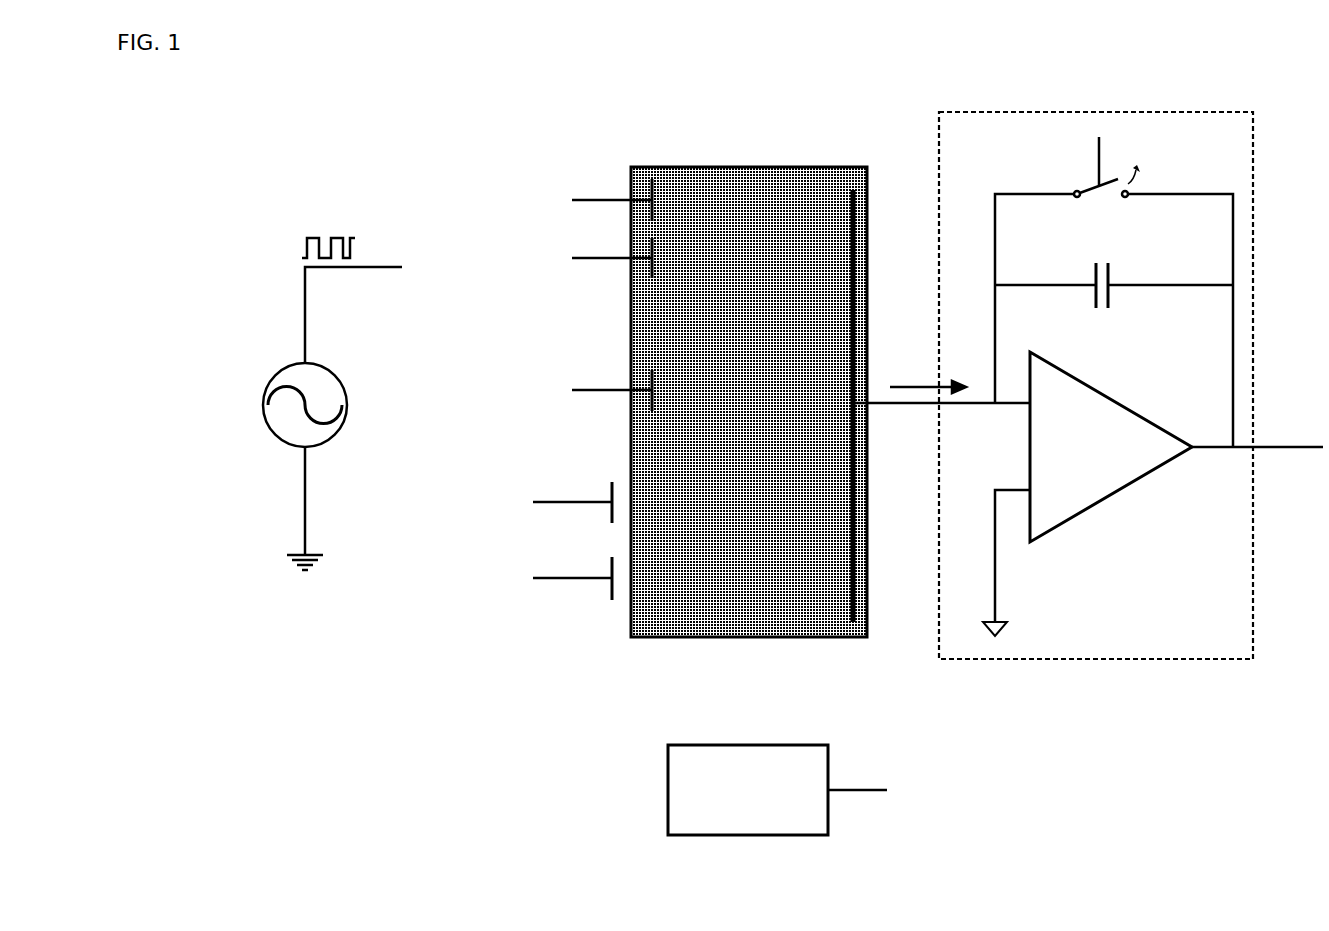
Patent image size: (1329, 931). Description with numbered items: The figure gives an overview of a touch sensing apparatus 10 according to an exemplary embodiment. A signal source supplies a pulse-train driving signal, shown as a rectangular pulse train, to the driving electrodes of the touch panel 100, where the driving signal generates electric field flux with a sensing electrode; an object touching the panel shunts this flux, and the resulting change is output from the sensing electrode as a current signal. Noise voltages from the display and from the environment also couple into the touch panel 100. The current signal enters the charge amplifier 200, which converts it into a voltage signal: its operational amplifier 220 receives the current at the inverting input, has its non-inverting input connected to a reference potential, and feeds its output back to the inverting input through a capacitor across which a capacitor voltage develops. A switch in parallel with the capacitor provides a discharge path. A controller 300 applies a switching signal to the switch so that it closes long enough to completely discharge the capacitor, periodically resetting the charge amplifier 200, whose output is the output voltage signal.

The touch sensing system 10 is at (362, 128).
The touch panel 100 is at (630, 636).
The charge amplifier 200 is at (1228, 661).
The operational amplifier 220 is at (1102, 505).
The controller 300 is at (668, 747).